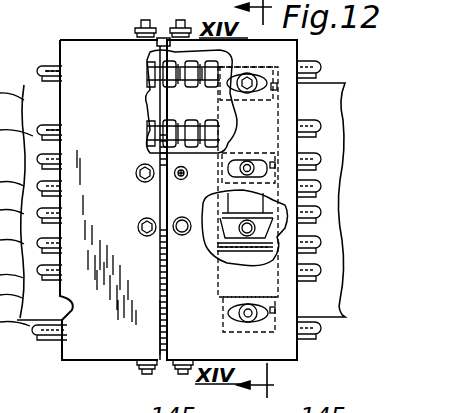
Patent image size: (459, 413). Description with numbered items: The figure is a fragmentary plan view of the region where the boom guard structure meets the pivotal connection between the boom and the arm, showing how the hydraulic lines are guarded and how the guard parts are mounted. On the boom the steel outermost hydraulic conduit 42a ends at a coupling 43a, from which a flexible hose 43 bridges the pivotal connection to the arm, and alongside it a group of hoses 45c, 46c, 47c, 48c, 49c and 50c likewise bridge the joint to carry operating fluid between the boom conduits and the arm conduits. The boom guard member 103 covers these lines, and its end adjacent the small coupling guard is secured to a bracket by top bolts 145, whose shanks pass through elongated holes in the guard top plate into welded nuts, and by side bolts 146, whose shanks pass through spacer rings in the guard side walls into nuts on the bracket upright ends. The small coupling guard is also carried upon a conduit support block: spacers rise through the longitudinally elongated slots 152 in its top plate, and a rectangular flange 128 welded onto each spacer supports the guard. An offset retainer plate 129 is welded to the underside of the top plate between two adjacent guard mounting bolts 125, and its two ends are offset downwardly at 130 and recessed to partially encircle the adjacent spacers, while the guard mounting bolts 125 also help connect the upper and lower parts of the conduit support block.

The boom guard member 103 is at (108, 352).
The outermost hydraulic conduit 42a is at (38, 68).
The coupling 43a is at (160, 75).
The flexible hose 43 is at (321, 69).
The hose 45c is at (329, 272).
The hose 46c is at (329, 244).
The hose 47c is at (329, 214).
The hose 48c is at (329, 189).
The hose 49c is at (329, 159).
The hose 50c is at (165, 122).
The guard mounting bolt 125 is at (257, 319).
The rectangular flange 128 is at (216, 197).
The offset retainer plate 129 is at (247, 247).
The downwardly offset end 130 is at (230, 246).
The top bolt 145 is at (176, 181).
The side bolt 146 is at (181, 20).
The longitudinally elongated slot 152 is at (189, 327).